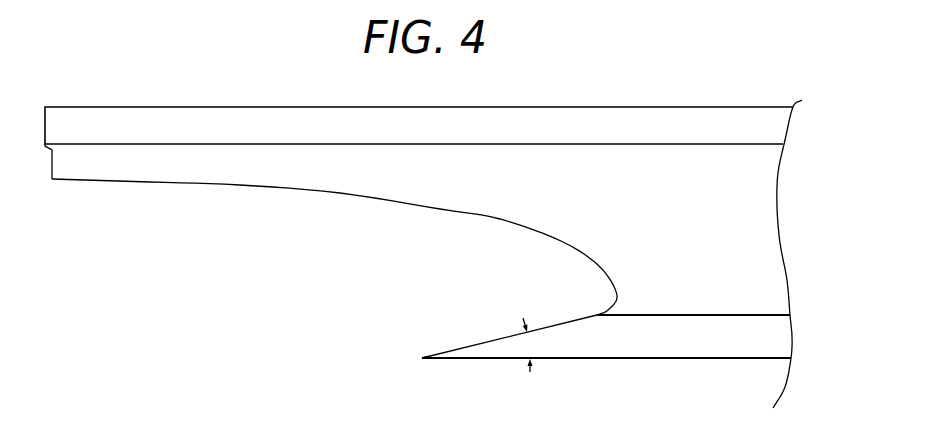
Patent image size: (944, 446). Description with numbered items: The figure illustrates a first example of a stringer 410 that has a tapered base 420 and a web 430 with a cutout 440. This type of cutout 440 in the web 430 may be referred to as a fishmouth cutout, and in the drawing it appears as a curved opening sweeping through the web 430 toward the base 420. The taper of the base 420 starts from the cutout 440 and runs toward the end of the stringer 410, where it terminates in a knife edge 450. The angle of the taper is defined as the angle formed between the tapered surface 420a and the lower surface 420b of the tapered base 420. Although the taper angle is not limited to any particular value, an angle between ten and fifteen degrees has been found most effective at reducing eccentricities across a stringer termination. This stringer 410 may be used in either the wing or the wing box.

The stringer 410 is at (423, 106).
The tapered base 420 is at (645, 352).
The tapered surface 420a is at (477, 345).
The lower surface 420b is at (478, 359).
The web 430 is at (815, 254).
The cutout 440 is at (366, 247).
The knife edge 450 is at (422, 358).